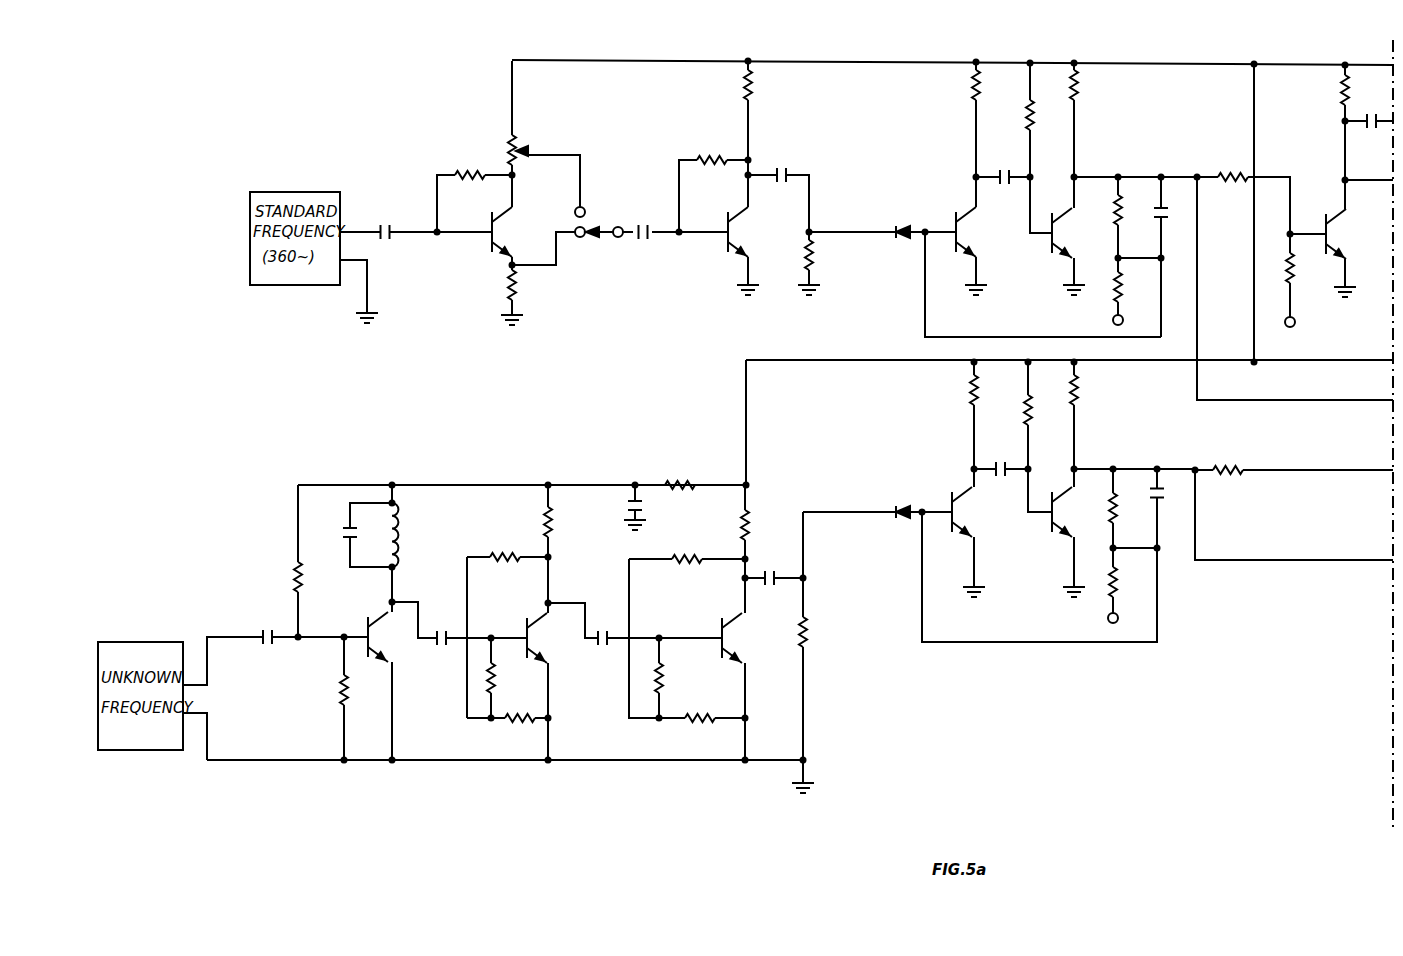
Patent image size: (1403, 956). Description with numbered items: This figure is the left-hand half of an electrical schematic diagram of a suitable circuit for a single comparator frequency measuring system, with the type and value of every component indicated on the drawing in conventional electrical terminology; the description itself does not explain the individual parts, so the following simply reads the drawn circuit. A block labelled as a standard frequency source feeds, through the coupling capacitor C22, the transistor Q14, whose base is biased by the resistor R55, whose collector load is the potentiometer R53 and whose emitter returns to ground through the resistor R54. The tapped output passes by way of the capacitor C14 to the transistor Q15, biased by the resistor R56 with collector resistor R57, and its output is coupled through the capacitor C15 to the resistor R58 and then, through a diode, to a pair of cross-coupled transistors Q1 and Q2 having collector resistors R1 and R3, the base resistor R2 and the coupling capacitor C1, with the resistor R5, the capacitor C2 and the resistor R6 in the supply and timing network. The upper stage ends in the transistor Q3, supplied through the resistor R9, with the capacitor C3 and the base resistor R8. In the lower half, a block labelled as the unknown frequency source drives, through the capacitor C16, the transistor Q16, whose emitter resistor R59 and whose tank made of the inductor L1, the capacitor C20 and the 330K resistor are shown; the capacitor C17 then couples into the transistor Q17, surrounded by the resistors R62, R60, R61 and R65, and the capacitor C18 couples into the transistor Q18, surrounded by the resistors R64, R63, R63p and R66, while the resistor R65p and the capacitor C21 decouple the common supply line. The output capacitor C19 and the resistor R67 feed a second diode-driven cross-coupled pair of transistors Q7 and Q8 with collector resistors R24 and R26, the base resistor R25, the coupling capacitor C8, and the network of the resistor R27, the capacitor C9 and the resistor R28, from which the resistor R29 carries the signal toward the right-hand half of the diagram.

The coupling capacitor 2 Mfd C22 is at (388, 253).
The transistor 2N408 Q14 is at (474, 244).
The resistor 470K R55 is at (474, 182).
The potentiometer 5000 ohm R53 is at (546, 139).
The resistor 2.2K R54 is at (530, 291).
The capacitor 2 Mfd C14 is at (595, 229).
The resistor 470K R56 is at (713, 177).
The resistor 12K R57 is at (768, 110).
The transistor 2N408 Q15 is at (713, 227).
The capacitor 2 Mfd C15 is at (778, 183).
The resistor 100K R58 is at (827, 263).
The resistor 6.8K R1 is at (952, 119).
The capacitor 910 pf C1 is at (1003, 194).
The transistor 2N408 Q1 is at (898, 236).
The resistor 290K R2 is at (1051, 148).
The resistor 6.8K R3 is at (1094, 120).
The transistor 2N408 Q2 is at (1049, 236).
The resistor 470K R5 is at (1119, 259).
The capacitor 33 pf C2 is at (1159, 257).
The resistor 47K R6 is at (1225, 203).
The resistor 270K R9 is at (1323, 93).
The capacitor (special) C3 is at (1371, 147).
The transistor 2N404 Q3 is at (1338, 238).
The resistor 47K R8 is at (1301, 291).
The resistor 330K is at (274, 561).
The inductor 1H L1 is at (410, 543).
The capacitor .12 Mfd C20 is at (346, 527).
The capacitor 2 Mfd C16 is at (275, 657).
The resistor 10K R59 is at (359, 698).
The transistor 2N408 Q16 is at (393, 681).
The capacitor .05 Mfd C17 is at (441, 620).
The resistor 47K R62 is at (507, 619).
The resistor 18K R65 is at (566, 544).
The transistor 2N408 Q17 is at (510, 674).
The resistor 150K R60 is at (512, 678).
The resistor 10K R61 is at (507, 730).
The capacitor 2 Mfd C18 is at (603, 647).
The resistor 47K R64 is at (687, 636).
The resistor 150K R63 is at (680, 678).
The resistor R63' 10K R63p is at (702, 739).
The transistor 2N408 Q18 is at (726, 669).
The resistor 18K R66 is at (726, 531).
The resistor R65' 3.3K R65p is at (690, 466).
The capacitor 50 Mfd C21 is at (658, 507).
The capacitor 2 Mfd C19 is at (774, 562).
The resistor 100K R67 is at (827, 636).
The resistor 6.8K R24 is at (954, 415).
The resistor 290K R25 is at (1049, 437).
The resistor 6.8K R26 is at (1095, 415).
The capacitor 910 pf C8 is at (1001, 450).
The transistor 2N408 Q7 is at (894, 533).
The transistor 2N408 Q8 is at (1048, 533).
The resistor 220K R27 is at (1116, 508).
The capacitor 33 pf C9 is at (1154, 508).
The resistor 470K R28 is at (1127, 595).
The resistor 47K R29 is at (1275, 494).